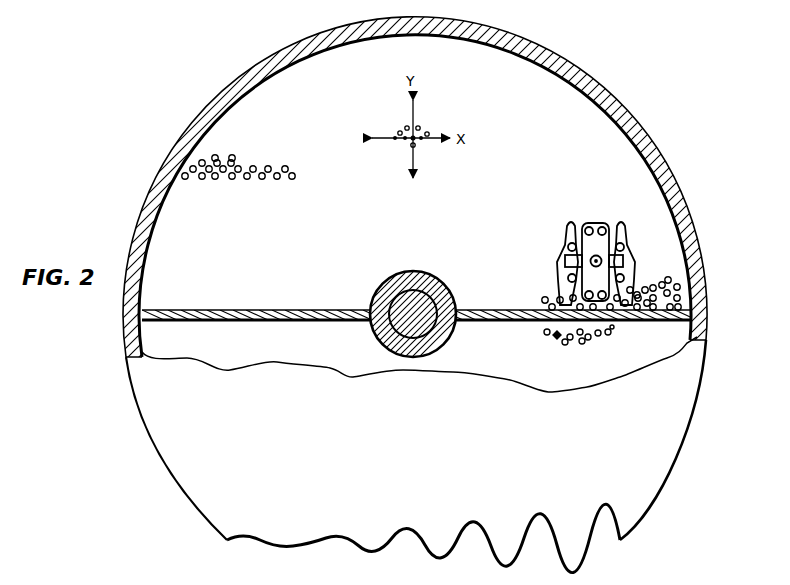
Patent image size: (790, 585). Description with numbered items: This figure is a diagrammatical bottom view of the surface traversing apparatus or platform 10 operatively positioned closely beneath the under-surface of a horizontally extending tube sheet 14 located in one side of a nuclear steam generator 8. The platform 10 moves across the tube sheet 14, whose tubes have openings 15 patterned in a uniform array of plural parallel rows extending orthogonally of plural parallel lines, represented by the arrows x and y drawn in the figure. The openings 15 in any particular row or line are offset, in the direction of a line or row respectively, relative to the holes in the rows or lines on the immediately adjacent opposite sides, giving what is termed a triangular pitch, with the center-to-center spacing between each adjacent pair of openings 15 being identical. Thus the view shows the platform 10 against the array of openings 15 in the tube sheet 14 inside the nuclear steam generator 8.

The nuclear steam generator 8 is at (124, 372).
The surface traversing apparatus or platform 10 is at (566, 214).
The tube sheet 14 is at (682, 296).
The openings 15 is at (277, 178).